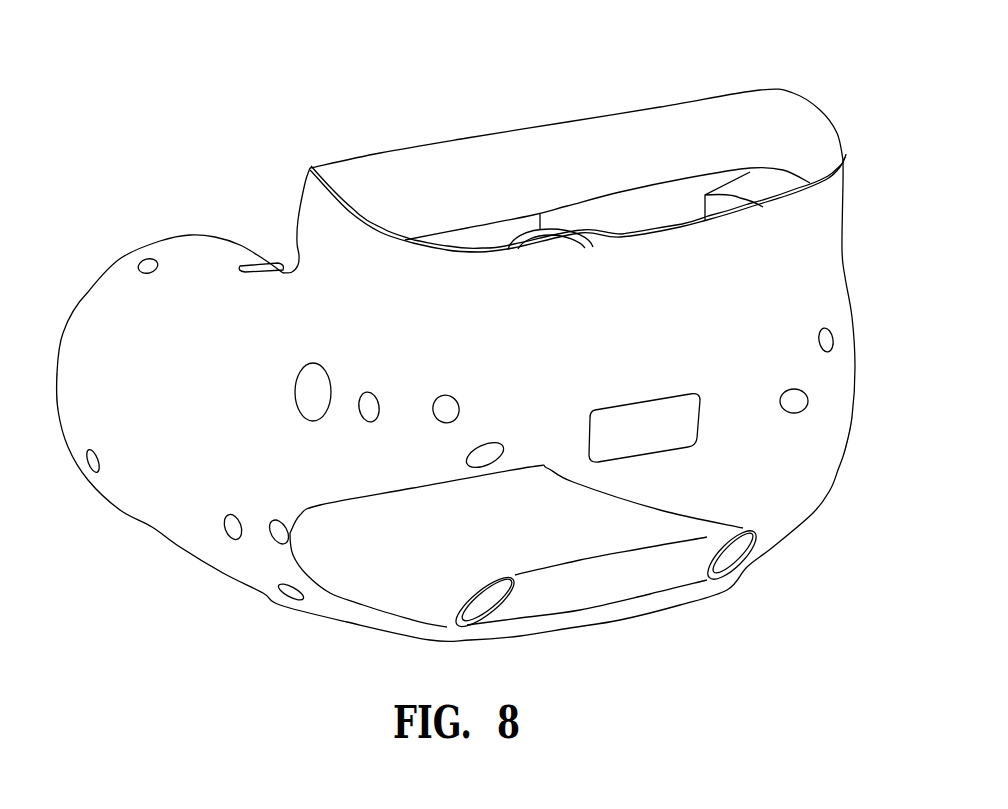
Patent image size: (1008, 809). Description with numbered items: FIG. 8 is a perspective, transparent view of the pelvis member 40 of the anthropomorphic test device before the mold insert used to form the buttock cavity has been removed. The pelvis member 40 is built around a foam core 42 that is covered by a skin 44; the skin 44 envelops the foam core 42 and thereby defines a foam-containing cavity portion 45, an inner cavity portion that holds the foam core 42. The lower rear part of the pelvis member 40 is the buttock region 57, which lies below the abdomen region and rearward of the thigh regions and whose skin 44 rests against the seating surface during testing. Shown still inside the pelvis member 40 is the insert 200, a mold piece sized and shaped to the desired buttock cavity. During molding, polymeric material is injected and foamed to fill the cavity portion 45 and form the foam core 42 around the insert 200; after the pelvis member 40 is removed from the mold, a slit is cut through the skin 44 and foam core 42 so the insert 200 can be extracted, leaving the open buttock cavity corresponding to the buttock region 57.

The pelvis member 40 is at (831, 109).
The foam core 42 is at (190, 500).
The skin 44 is at (223, 570).
The foam-containing cavity portion 45 is at (158, 428).
The buttock region 57 is at (846, 465).
The insert 200 is at (627, 573).